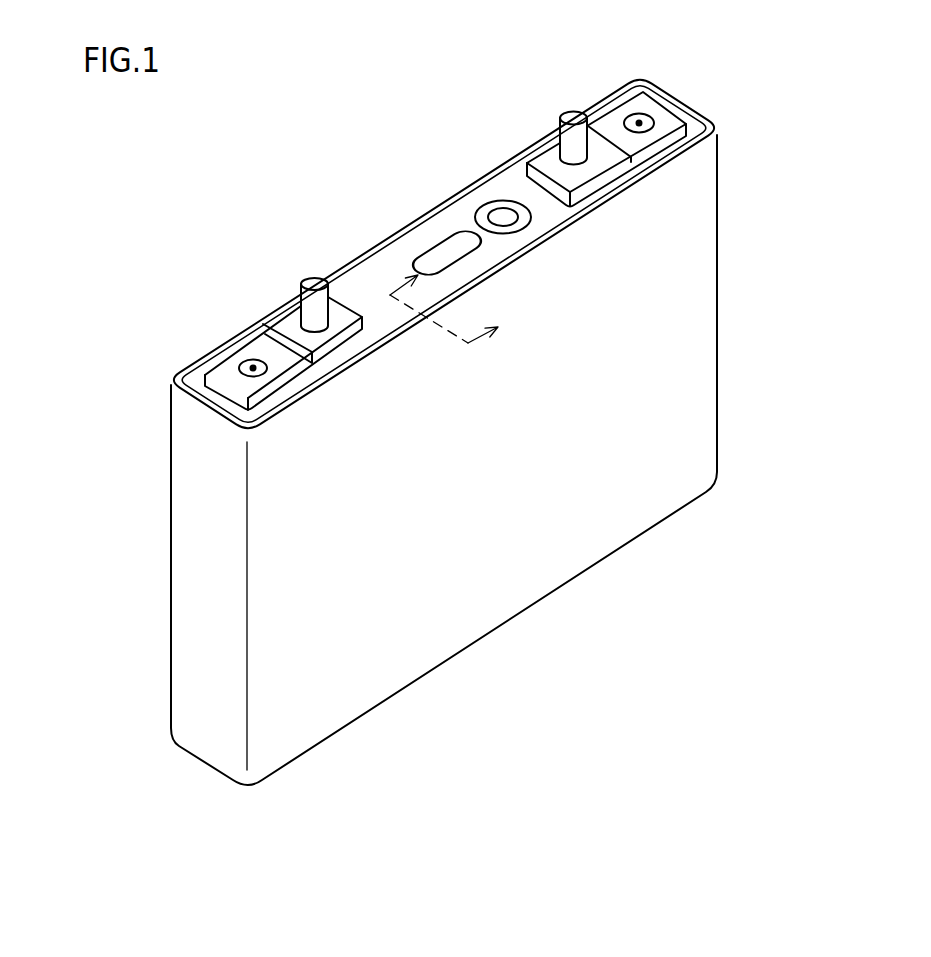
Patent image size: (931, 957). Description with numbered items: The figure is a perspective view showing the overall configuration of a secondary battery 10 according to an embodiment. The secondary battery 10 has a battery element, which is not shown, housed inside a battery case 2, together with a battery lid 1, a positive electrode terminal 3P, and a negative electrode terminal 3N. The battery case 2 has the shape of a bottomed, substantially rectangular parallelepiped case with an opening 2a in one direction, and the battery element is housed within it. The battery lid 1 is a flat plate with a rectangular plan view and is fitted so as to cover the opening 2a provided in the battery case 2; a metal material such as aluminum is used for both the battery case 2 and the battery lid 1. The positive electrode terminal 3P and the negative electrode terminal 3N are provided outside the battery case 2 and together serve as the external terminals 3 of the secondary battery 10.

The secondary battery 10 is at (146, 226).
The battery lid 1 is at (366, 287).
The battery case 2 is at (698, 316).
The opening 2a is at (444, 226).
The external terminals 3 is at (445, 249).
The negative electrode terminal 3N is at (285, 323).
The positive electrode terminal 3P is at (547, 160).